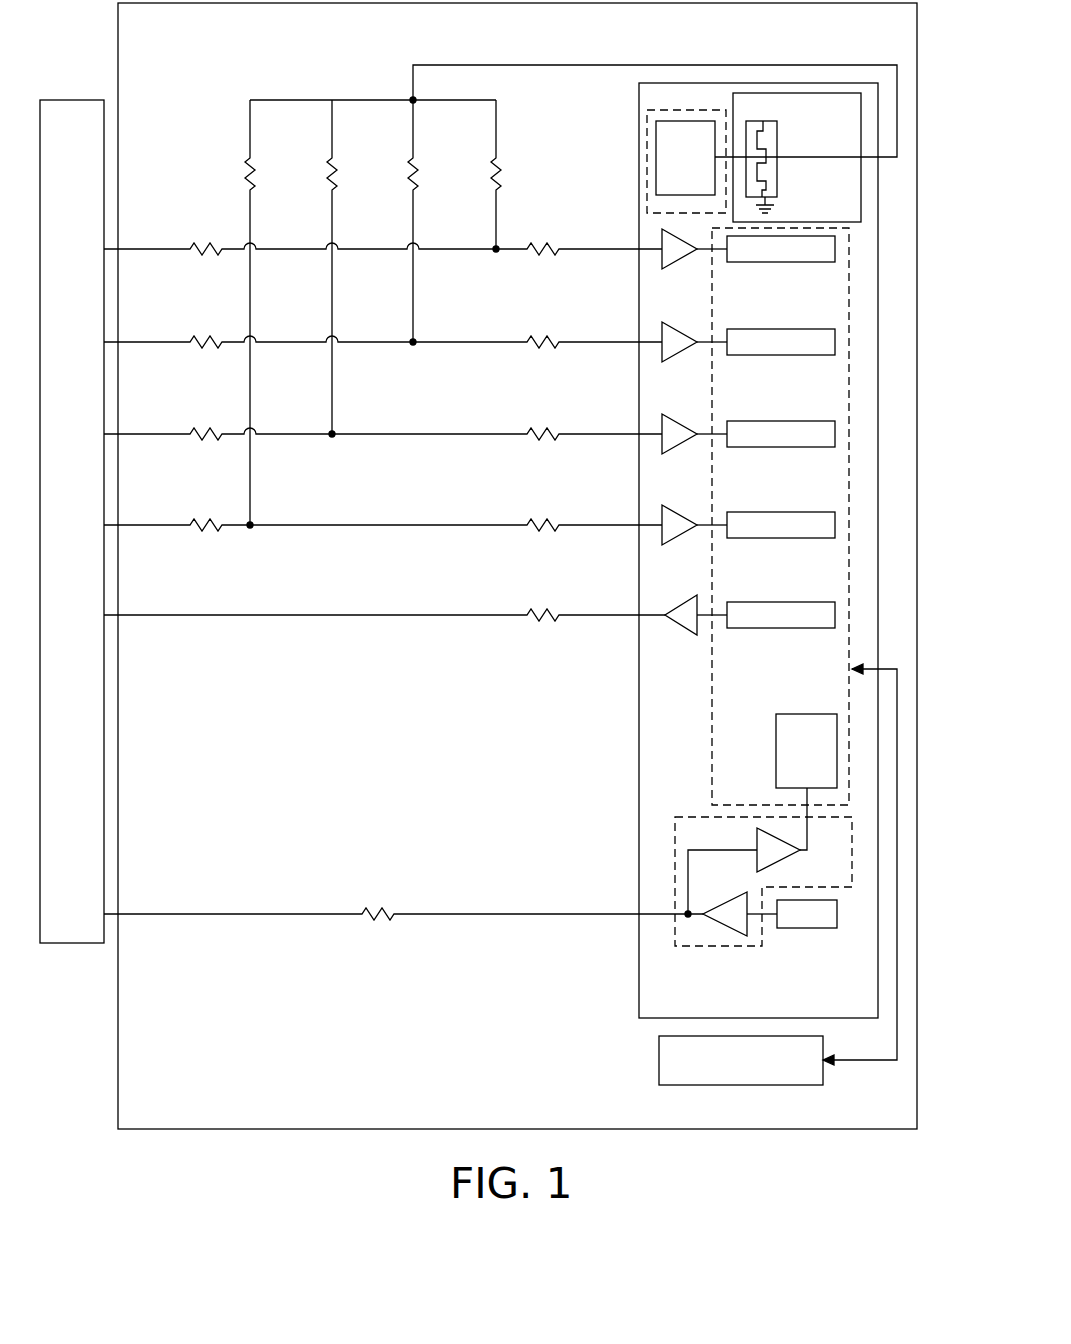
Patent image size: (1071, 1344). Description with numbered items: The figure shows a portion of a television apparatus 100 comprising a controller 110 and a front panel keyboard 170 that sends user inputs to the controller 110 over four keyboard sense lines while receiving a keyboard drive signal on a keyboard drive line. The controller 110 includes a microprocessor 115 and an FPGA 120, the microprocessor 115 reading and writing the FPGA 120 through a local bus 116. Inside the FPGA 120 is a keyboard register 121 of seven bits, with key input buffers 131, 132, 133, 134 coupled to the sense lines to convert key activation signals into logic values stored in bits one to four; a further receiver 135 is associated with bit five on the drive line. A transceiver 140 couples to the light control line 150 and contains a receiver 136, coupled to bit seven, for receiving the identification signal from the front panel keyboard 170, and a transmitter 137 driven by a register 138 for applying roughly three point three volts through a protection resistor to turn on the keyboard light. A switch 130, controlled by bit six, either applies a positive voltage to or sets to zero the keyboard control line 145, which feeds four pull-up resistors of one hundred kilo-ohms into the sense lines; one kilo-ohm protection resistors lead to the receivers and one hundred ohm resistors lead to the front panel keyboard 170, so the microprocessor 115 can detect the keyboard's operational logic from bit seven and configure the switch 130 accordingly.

The television apparatus 100 is at (203, 1171).
The controller 110 is at (201, 1102).
The microprocessor 115 is at (659, 1060).
The local bus 116 is at (867, 1062).
The FPGA 120 is at (639, 991).
The keyboard register 121 is at (712, 735).
The switch 130 is at (777, 133).
The key input buffer 131 is at (662, 232).
The key input buffer 132 is at (676, 324).
The key input buffer 133 is at (676, 416).
The key input buffer 134 is at (676, 507).
The receiver 135 is at (670, 602).
The receiver 136 is at (757, 862).
The transmitter 137 is at (720, 936).
The register 138 is at (806, 928).
The transceiver 140 is at (675, 930).
The keyboard control line 145 is at (823, 65).
The light control line 150 is at (510, 912).
The front panel keyboard 170 is at (58, 946).